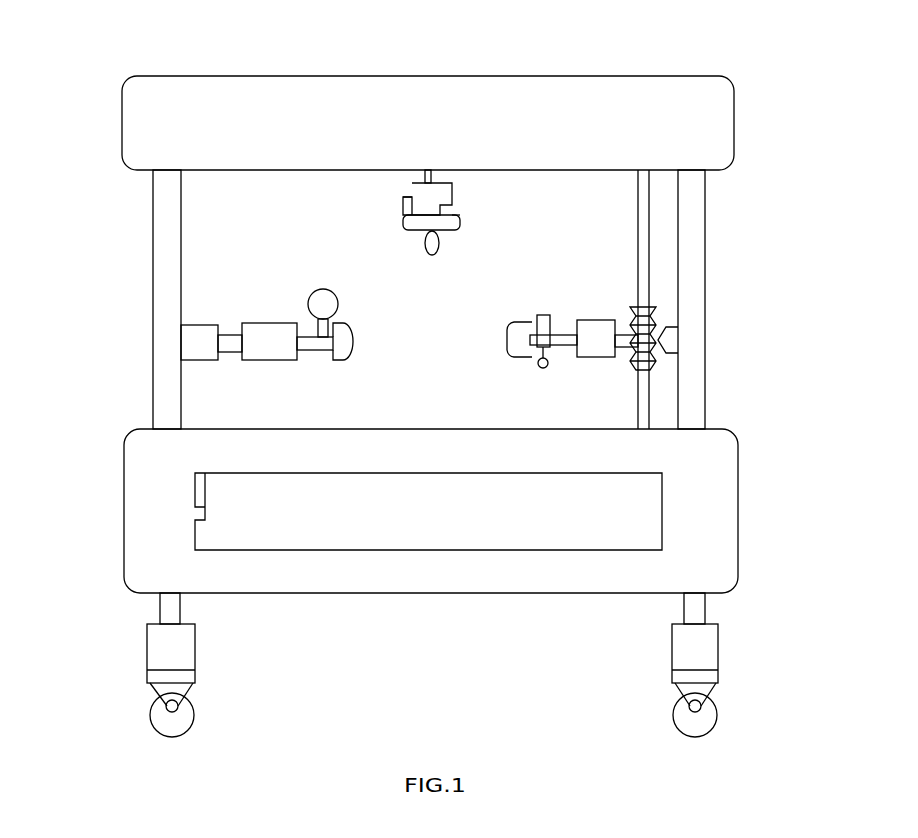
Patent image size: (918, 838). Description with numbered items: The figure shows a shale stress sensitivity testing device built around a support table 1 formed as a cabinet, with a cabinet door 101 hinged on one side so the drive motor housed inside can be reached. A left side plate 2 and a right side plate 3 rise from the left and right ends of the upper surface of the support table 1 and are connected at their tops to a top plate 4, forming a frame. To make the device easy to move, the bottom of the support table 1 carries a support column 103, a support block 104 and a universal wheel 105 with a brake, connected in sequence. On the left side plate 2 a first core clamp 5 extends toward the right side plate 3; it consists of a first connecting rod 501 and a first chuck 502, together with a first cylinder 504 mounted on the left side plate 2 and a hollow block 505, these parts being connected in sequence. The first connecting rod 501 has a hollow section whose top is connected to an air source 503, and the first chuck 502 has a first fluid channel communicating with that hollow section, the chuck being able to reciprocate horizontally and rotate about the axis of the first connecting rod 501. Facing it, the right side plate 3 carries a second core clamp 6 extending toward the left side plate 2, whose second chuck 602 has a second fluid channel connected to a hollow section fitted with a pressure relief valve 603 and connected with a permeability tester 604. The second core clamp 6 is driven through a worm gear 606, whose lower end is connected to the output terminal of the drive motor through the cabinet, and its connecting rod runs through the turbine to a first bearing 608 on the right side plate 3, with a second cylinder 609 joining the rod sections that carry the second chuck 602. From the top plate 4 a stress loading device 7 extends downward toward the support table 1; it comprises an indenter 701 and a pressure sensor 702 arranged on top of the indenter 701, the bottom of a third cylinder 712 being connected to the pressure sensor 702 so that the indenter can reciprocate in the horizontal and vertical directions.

The support table 1 is at (160, 488).
The cabinet door 101 is at (220, 513).
The support column 103 is at (156, 612).
The support block 104 is at (146, 652).
The universal wheel 105 is at (167, 735).
The left side plate 2 is at (153, 348).
The right side plate 3 is at (704, 380).
The top plate 4 is at (633, 118).
The first core clamp 5 is at (192, 184).
The first connecting rod 501 is at (297, 320).
The first chuck 502 is at (352, 326).
The air source 503 is at (312, 293).
The first cylinder 504 is at (182, 333).
The hollow block 505 is at (242, 333).
The second core clamp 6 is at (671, 220).
The second chuck 602 is at (514, 322).
The pressure relief valve 603 is at (542, 312).
The permeability tester 604 is at (551, 365).
The worm gear 606 is at (553, 320).
The first bearing 608 is at (664, 327).
The second cylinder 609 is at (643, 307).
The stress loading device 7 is at (427, 170).
The indenter 701 is at (347, 318).
The pressure sensor 702 is at (455, 217).
The third cylinder 712 is at (408, 208).